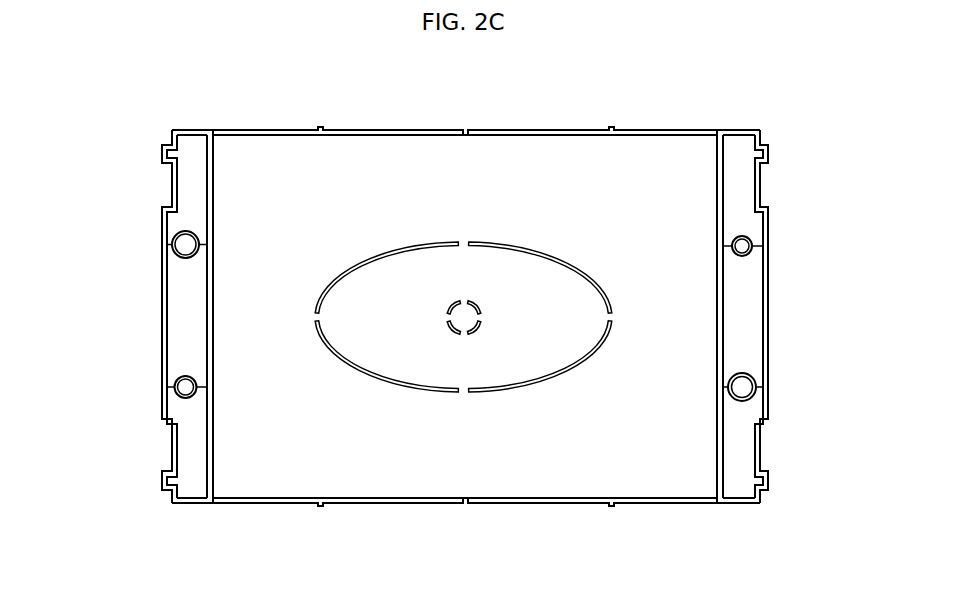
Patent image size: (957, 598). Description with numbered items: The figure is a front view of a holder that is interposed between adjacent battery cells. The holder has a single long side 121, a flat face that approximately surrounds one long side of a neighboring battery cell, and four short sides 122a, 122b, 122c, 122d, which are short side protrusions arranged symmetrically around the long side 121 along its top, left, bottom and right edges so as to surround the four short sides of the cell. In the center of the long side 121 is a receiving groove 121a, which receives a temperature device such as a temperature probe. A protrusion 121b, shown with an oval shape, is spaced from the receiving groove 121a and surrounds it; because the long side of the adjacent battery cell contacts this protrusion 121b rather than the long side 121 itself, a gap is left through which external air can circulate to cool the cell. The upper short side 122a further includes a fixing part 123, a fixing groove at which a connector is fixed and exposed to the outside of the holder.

The long side 121 is at (537, 156).
The receiving groove 121a is at (480, 324).
The protrusion 121b is at (475, 393).
The short side 122a is at (370, 130).
The short side 122b is at (162, 311).
The short side 122c is at (367, 503).
The short side 122d is at (767, 311).
The fixing part 123 is at (464, 130).